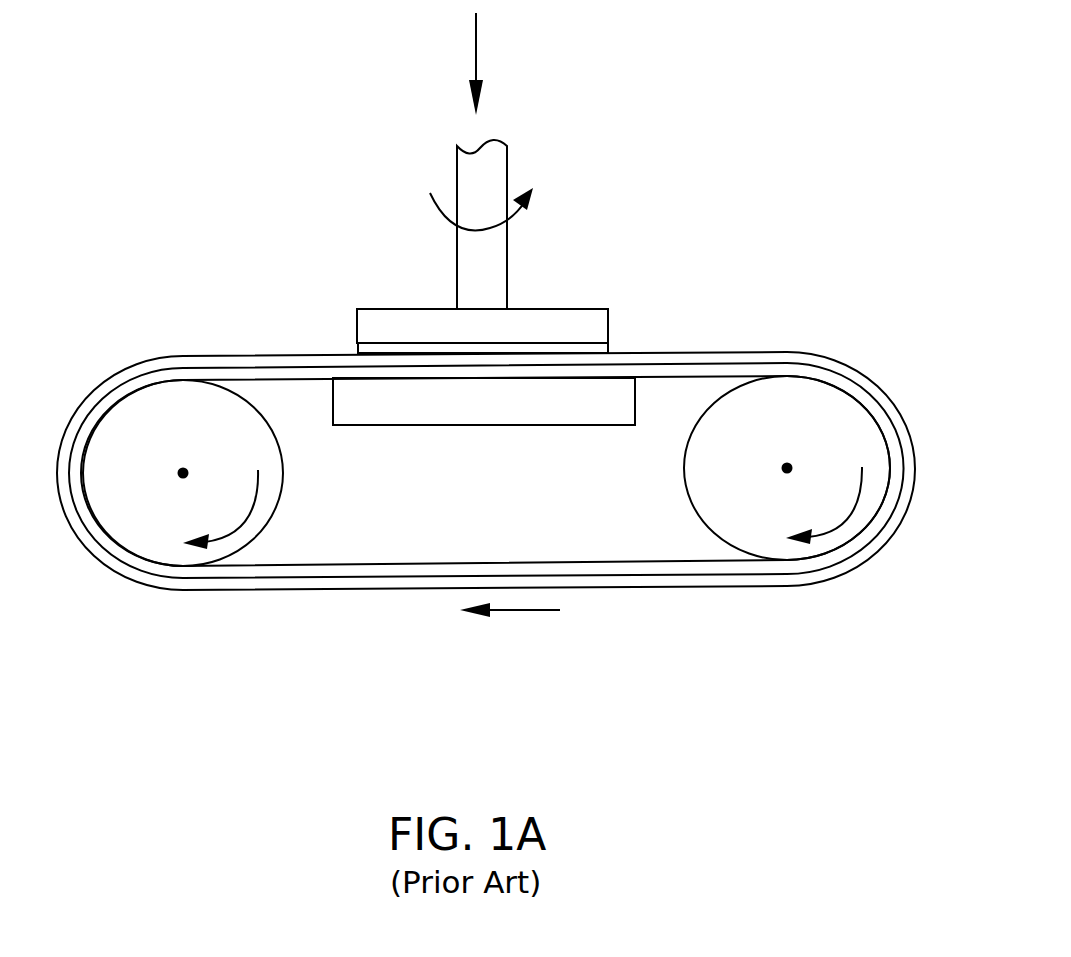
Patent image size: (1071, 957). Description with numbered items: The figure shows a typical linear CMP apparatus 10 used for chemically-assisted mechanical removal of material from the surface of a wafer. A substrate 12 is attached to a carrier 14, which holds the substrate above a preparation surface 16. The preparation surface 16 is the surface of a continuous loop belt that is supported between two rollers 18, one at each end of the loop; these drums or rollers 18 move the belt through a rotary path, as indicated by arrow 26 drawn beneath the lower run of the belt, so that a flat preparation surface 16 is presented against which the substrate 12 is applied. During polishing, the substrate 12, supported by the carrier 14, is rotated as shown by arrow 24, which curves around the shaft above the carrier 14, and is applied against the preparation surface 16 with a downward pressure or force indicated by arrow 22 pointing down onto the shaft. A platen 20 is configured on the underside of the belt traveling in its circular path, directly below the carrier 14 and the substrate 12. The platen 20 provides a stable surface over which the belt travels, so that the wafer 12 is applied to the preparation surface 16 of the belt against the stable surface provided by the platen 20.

The linear CMP apparatus 10 is at (238, 122).
The substrate 12 is at (360, 350).
The carrier 14 is at (397, 313).
The preparation surface 16 is at (163, 361).
The rollers 18 is at (855, 415).
The platen 20 is at (392, 415).
The arrow indicating downward force 22 is at (476, 34).
The arrow indicating rotation 24 is at (432, 205).
The arrow indicating belt travel 26 is at (545, 610).